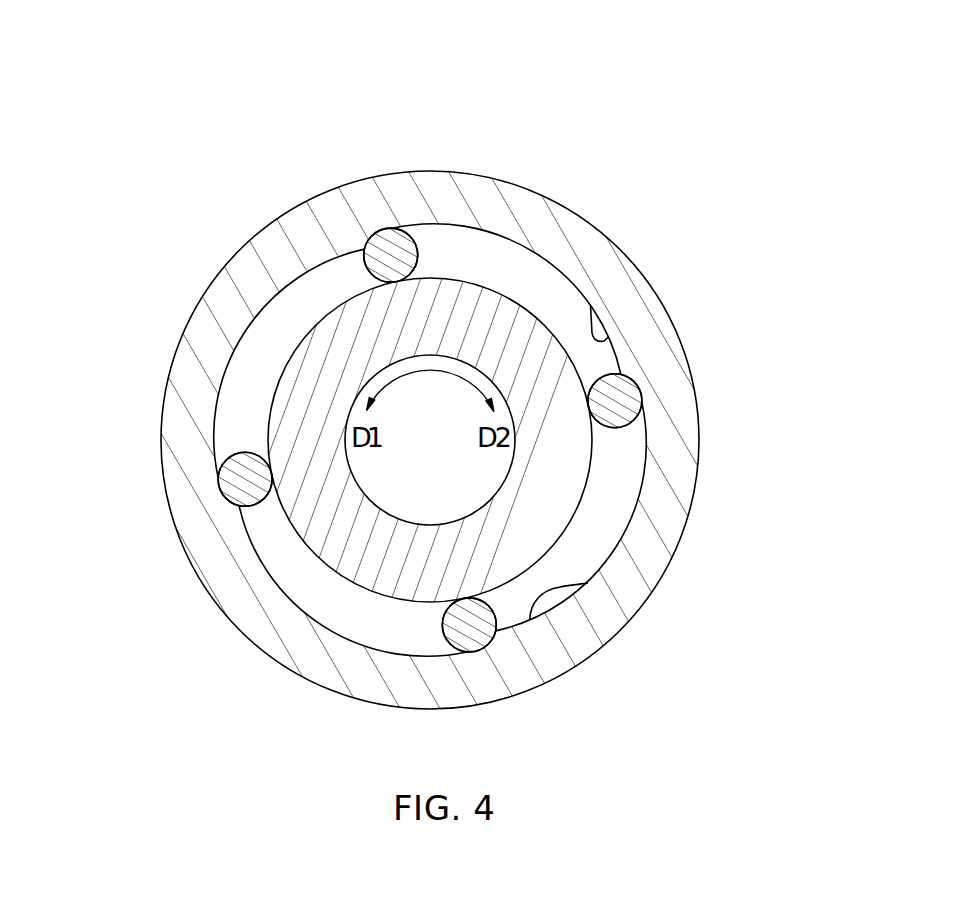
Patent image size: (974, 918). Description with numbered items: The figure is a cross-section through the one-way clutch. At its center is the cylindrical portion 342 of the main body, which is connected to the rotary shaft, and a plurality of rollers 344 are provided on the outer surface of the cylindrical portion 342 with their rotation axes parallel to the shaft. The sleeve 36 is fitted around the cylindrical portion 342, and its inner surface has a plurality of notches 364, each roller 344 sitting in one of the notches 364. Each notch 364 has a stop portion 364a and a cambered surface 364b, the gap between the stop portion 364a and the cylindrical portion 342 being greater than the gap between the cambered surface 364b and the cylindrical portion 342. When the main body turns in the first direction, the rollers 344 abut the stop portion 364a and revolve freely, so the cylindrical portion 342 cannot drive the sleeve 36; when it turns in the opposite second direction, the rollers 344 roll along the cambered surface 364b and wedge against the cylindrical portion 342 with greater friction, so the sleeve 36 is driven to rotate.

The sleeve 36 is at (240, 248).
The cylindrical portion 342 is at (287, 395).
The rollers 344 is at (620, 397).
The notches 364 is at (528, 247).
The stop portion 364a is at (362, 250).
The cambered surface 364b is at (591, 303).